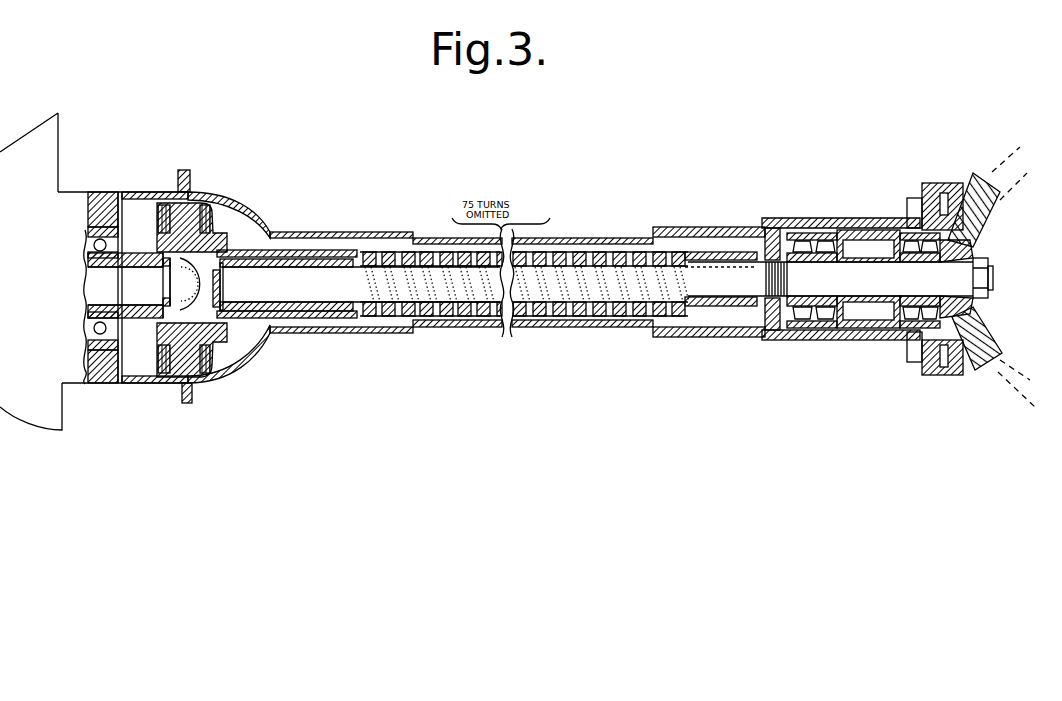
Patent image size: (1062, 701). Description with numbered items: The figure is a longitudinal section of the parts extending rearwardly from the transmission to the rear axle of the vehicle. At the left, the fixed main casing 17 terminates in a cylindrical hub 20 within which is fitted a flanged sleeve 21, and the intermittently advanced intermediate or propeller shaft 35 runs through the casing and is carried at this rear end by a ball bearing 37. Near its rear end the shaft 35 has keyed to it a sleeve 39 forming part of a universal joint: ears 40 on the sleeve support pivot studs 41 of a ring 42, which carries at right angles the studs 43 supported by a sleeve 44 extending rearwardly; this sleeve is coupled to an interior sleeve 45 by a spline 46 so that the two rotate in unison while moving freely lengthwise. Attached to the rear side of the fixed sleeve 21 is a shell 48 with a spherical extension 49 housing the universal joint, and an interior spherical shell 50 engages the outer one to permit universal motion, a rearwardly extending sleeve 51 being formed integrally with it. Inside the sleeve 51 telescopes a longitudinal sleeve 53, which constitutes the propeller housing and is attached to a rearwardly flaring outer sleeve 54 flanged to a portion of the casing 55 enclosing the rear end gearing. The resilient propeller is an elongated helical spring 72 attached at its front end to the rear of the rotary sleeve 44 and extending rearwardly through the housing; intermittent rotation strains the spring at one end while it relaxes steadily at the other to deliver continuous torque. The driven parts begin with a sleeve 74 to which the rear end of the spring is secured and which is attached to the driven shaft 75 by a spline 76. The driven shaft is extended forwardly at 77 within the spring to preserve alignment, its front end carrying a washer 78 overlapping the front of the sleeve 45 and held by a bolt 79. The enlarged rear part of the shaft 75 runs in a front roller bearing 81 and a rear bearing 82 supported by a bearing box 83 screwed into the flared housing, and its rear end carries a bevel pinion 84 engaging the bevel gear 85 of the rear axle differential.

The main casing 17 is at (31, 271).
The hub 20 is at (91, 191).
The flanged sleeve 21 is at (87, 225).
The shaft 35 is at (108, 284).
The bearing 37 is at (88, 327).
The sleeve 39 is at (127, 253).
The ears 40 is at (227, 318).
The pivot studs 41 is at (217, 323).
The ring 42 is at (200, 350).
The studs 43 is at (182, 358).
The sleeve 44 is at (235, 249).
The interior sleeve 45 is at (317, 303).
The spline 46 is at (318, 252).
The shell 48 is at (156, 192).
The spherical extension 49 is at (202, 192).
The interior spherical shell 50 is at (234, 204).
The sleeve 51 is at (380, 231).
The longitudinal sleeve 53 is at (613, 237).
The outer sleeve 54 is at (807, 218).
The casing 55 is at (937, 183).
The helical spring 72 is at (573, 310).
The sleeve 74 is at (713, 307).
The driven shaft 75 is at (840, 278).
The spline 76 is at (720, 258).
The shaft extension 77 is at (361, 284).
The washer 78 is at (253, 286).
The bolt 79 is at (217, 288).
The front roller bearing 81 is at (810, 333).
The rear bearing 82 is at (923, 312).
The bearing box 83 is at (857, 328).
The bevel pinion 84 is at (960, 247).
The bevel gear 85 is at (964, 180).